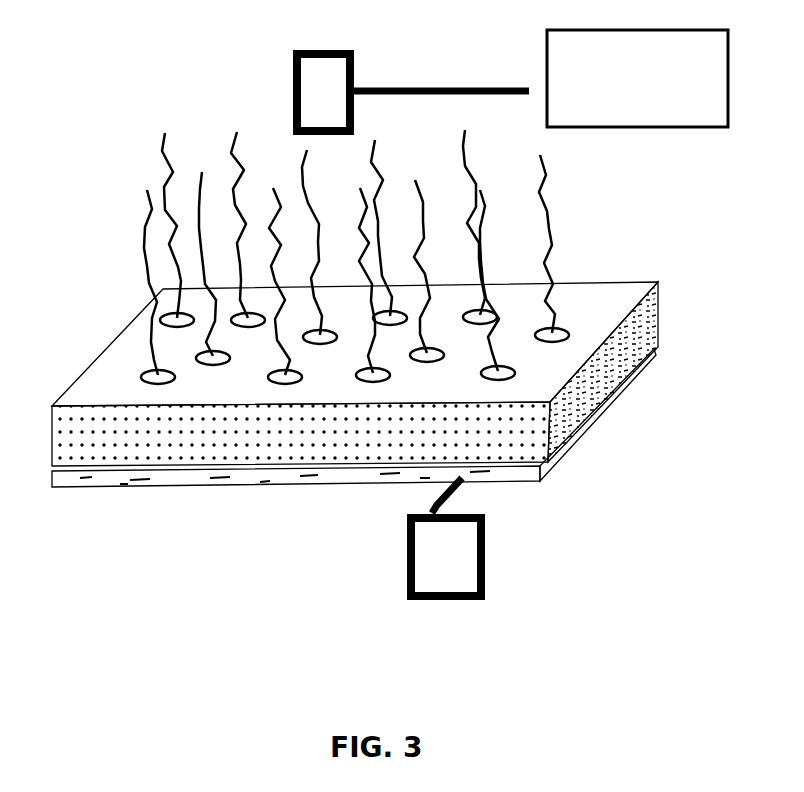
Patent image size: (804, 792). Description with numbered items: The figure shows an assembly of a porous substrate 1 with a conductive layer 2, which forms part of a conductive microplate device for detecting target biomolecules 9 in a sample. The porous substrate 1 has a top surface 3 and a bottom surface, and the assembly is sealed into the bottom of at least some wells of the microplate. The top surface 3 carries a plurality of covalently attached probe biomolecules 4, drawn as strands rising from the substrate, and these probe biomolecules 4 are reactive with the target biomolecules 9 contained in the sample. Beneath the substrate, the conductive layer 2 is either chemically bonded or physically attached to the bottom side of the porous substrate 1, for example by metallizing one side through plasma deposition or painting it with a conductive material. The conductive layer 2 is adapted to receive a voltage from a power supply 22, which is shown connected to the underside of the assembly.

The porous substrate 1 is at (405, 374).
The conductive layer 2 is at (312, 482).
The top surface 3 is at (610, 298).
The probe biomolecules 4 is at (552, 216).
The target biomolecules 9 is at (160, 322).
The power supply 22 is at (500, 552).